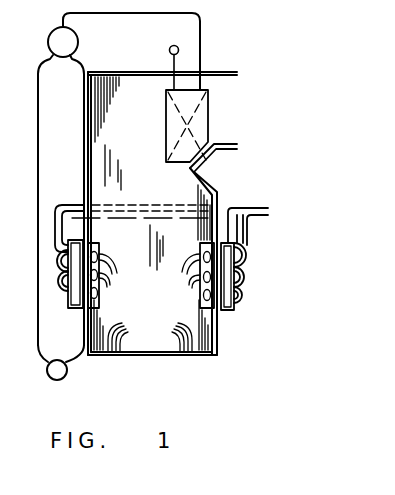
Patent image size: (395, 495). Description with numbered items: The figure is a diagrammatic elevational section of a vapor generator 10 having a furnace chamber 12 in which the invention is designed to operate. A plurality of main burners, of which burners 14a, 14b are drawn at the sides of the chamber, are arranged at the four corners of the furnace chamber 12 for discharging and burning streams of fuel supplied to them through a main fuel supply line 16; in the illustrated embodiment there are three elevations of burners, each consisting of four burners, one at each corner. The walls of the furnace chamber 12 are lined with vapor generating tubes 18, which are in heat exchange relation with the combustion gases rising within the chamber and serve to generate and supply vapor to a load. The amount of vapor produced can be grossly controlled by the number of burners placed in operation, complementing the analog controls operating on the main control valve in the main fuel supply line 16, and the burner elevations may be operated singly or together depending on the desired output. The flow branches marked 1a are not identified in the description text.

The vapor generator 10 is at (216, 44).
The furnace chamber 12 is at (141, 137).
The coolant flow branches 1a is at (73, 226).
The main burner 14a is at (94, 274).
The main burner 14b is at (199, 276).
The main fuel supply line 16 is at (259, 208).
The vapor generating tubes 18 is at (172, 331).